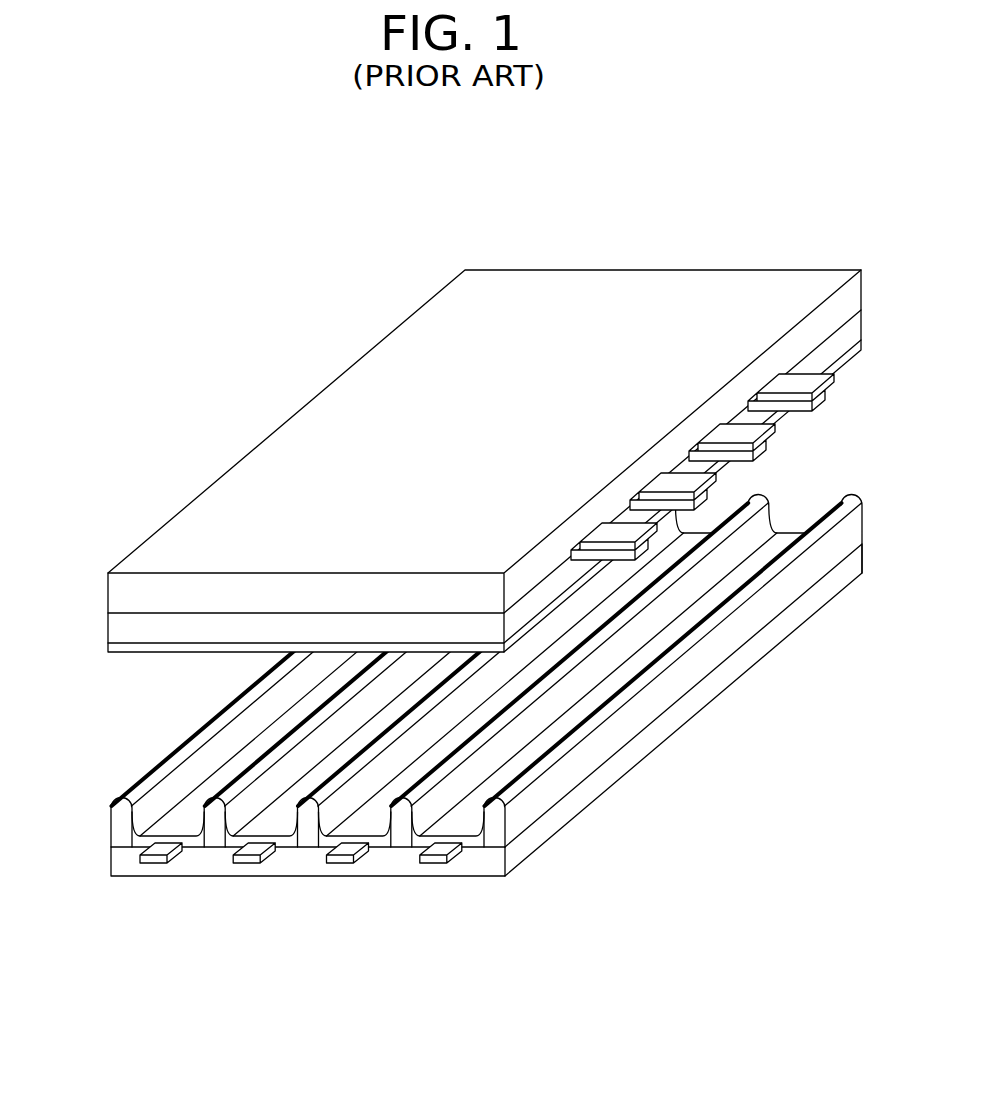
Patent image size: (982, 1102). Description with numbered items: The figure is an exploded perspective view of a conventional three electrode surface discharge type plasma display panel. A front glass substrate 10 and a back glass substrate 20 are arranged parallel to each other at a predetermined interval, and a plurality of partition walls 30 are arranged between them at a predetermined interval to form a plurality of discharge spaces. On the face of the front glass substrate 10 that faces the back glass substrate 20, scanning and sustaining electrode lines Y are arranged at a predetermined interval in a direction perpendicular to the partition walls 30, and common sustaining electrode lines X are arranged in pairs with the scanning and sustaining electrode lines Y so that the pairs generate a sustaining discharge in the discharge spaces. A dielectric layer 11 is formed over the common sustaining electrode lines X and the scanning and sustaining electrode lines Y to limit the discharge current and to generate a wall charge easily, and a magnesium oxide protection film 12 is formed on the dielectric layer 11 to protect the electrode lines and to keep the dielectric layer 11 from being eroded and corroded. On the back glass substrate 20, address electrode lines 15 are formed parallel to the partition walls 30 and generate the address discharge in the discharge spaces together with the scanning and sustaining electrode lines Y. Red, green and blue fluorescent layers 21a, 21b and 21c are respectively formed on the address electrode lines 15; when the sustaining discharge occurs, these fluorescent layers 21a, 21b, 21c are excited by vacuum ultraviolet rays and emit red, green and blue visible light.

The front glass substrate 10 is at (241, 482).
The dielectric layer 11 is at (118, 637).
The magnesium oxide (MgO) protection film 12 is at (116, 651).
The common sustaining electrode lines X is at (824, 384).
The scanning and sustaining electrode lines Y is at (766, 437).
The back glass substrate 20 is at (700, 700).
The partition walls 30 is at (555, 772).
The address electrode lines 15 is at (153, 862).
The R fluorescent layer 21a is at (178, 836).
The G fluorescent layer 21b is at (275, 836).
The B fluorescent layer 21c is at (373, 836).